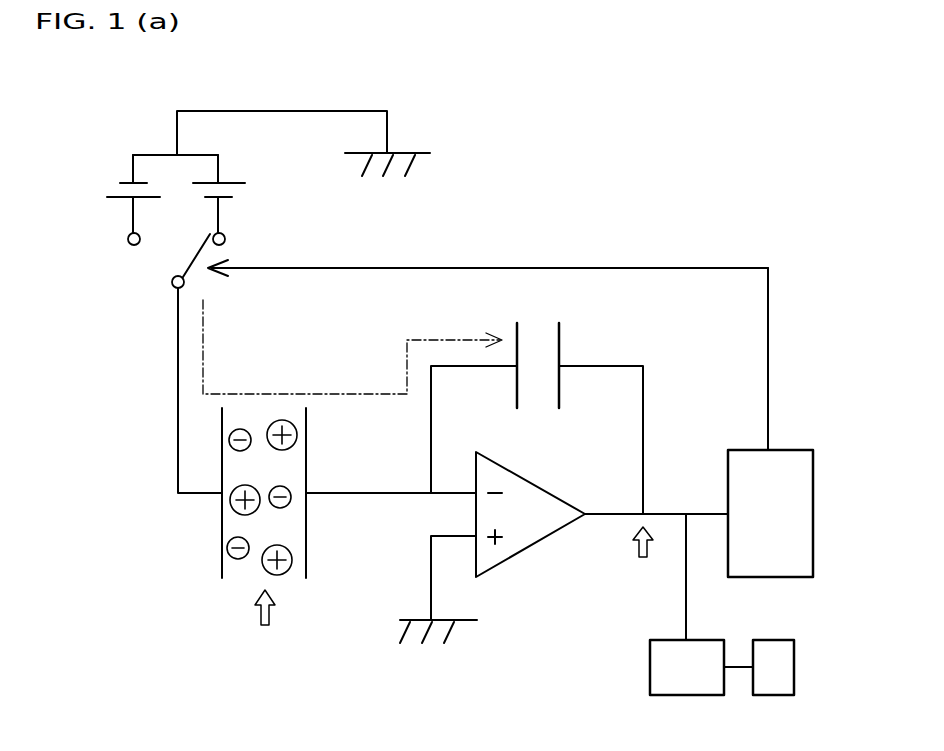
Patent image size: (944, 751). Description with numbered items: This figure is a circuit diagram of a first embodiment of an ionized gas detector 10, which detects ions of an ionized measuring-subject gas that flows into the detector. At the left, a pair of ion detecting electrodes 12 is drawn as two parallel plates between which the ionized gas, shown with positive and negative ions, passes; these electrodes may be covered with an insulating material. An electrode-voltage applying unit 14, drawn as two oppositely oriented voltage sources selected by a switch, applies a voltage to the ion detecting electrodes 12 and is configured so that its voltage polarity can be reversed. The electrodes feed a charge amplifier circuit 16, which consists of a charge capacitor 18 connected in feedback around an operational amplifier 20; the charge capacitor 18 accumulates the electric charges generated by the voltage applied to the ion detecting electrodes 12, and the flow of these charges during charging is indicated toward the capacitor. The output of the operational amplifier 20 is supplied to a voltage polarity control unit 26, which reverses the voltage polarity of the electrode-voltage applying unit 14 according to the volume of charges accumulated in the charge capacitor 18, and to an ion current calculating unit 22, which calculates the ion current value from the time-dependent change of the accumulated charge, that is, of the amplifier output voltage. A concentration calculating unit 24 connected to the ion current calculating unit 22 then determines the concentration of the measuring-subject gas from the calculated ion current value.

The ionized gas detector 10 is at (256, 53).
The ion detecting electrodes 12 is at (222, 566).
The electrode-voltage applying unit 14 is at (232, 198).
The charge amplifier circuit 16 is at (610, 465).
The charge capacitor 18 is at (560, 333).
The operational amplifier 20 is at (534, 536).
The ion current calculating unit 22 is at (657, 667).
The concentration calculating unit 24 is at (770, 652).
The voltage polarity control unit 26 is at (755, 456).